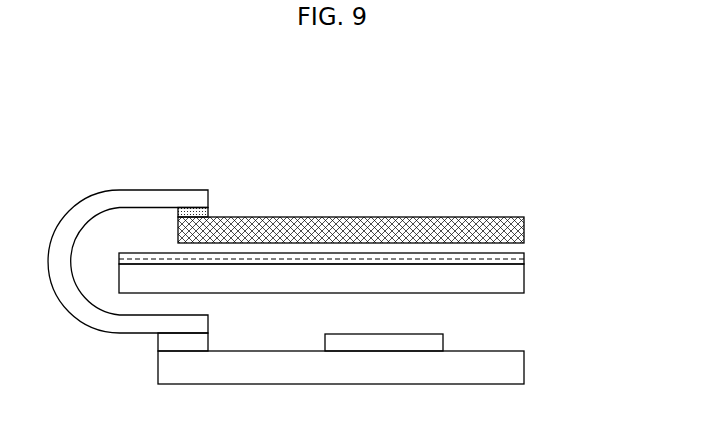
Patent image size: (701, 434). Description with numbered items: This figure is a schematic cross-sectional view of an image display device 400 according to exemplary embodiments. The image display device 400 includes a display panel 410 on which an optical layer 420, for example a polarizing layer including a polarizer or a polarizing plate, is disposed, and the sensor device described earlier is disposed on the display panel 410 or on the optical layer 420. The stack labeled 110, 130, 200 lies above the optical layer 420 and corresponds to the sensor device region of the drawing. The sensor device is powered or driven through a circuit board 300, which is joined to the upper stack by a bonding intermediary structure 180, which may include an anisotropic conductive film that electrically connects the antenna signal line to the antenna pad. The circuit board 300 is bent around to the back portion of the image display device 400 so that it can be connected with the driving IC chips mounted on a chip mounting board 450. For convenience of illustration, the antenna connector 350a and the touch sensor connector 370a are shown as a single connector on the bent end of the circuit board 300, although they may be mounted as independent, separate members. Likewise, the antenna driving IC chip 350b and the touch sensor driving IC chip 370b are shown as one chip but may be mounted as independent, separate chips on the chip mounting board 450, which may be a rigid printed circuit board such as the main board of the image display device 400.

The image display device 400 is at (96, 100).
The circuit board 300 is at (198, 189).
The bonding intermediary structure 180 is at (208, 213).
The substrate 110 is at (351, 180).
The display layer 130 is at (351, 180).
The encapsulation layer 200 is at (412, 210).
The optical layer 420 is at (514, 259).
The display panel 410 is at (510, 275).
The antenna connector 350a is at (216, 383).
The touch sensor connector 370a is at (183, 341).
The antenna driving IC chip 350b is at (406, 384).
The touch sensor driving IC chip 370b is at (385, 341).
The chip mounting board 450 is at (513, 367).